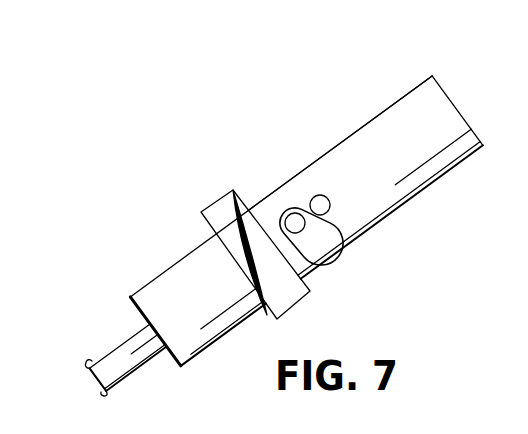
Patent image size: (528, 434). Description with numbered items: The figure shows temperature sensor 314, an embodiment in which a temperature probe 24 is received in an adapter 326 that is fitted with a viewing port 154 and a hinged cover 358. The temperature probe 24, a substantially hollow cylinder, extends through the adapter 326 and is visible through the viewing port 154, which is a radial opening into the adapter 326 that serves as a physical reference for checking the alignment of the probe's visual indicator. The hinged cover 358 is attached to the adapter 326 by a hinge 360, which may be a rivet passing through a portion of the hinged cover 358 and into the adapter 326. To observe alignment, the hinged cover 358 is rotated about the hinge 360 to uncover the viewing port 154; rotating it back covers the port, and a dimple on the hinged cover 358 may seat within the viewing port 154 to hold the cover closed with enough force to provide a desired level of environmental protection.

The temperature probe 24 is at (128, 338).
The temperature sensor 314 is at (366, 150).
The adapter 326 is at (352, 133).
The hinged cover 358 is at (336, 260).
The hinge 360 is at (287, 212).
The viewing port 154 is at (320, 195).